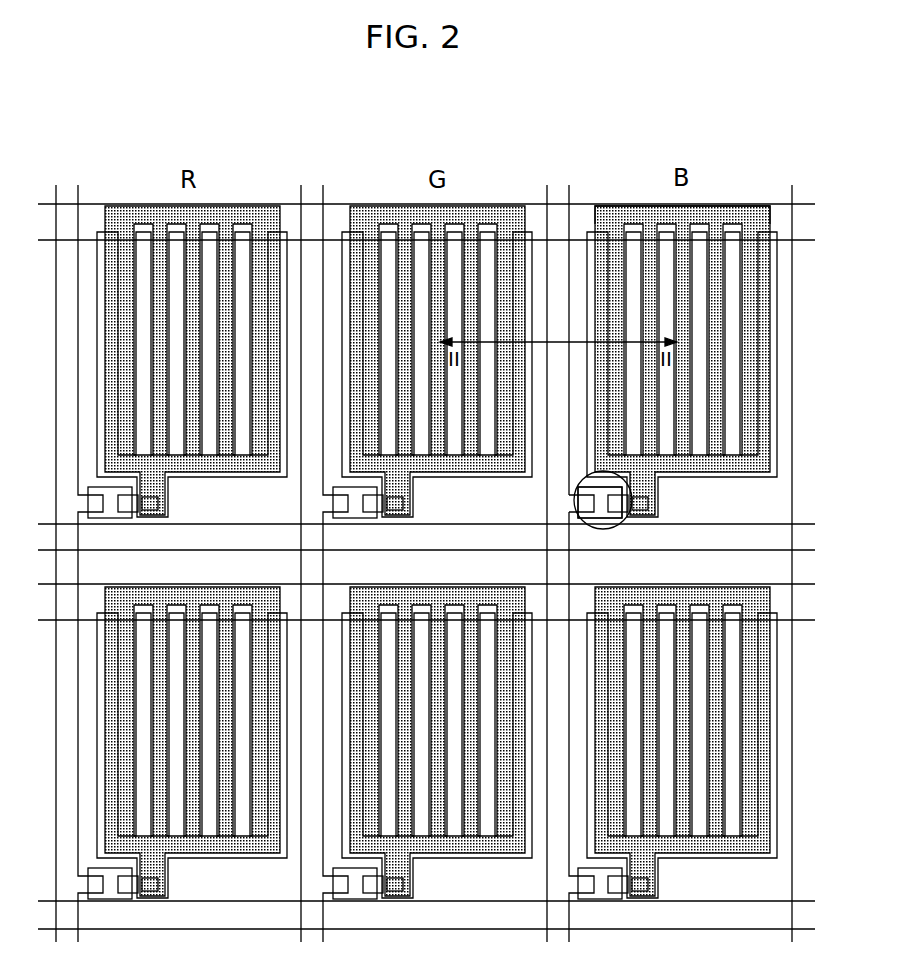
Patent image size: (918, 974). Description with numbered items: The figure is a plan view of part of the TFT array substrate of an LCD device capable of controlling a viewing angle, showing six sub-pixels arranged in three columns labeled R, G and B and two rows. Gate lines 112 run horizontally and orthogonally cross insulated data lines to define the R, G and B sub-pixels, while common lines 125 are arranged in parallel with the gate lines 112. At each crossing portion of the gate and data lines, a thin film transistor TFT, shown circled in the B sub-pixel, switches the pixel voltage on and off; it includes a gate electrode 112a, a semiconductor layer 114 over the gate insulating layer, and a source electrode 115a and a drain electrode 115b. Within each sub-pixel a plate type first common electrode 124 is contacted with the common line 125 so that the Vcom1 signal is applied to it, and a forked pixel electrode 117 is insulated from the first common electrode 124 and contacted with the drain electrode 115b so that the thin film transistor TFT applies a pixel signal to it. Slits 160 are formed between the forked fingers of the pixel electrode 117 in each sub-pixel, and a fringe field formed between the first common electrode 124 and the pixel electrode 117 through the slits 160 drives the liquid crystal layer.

The gate line 112 is at (693, 537).
The gate electrode 112a is at (577, 500).
The semiconductor layer 114 is at (607, 516).
The source electrode 115a is at (580, 522).
The drain electrode 115b is at (657, 502).
The pixel electrode 117 is at (678, 268).
The first common electrode 124 is at (595, 222).
The common line 125 is at (778, 207).
The slit 160 is at (737, 448).
The thin film transistor TFT is at (605, 529).